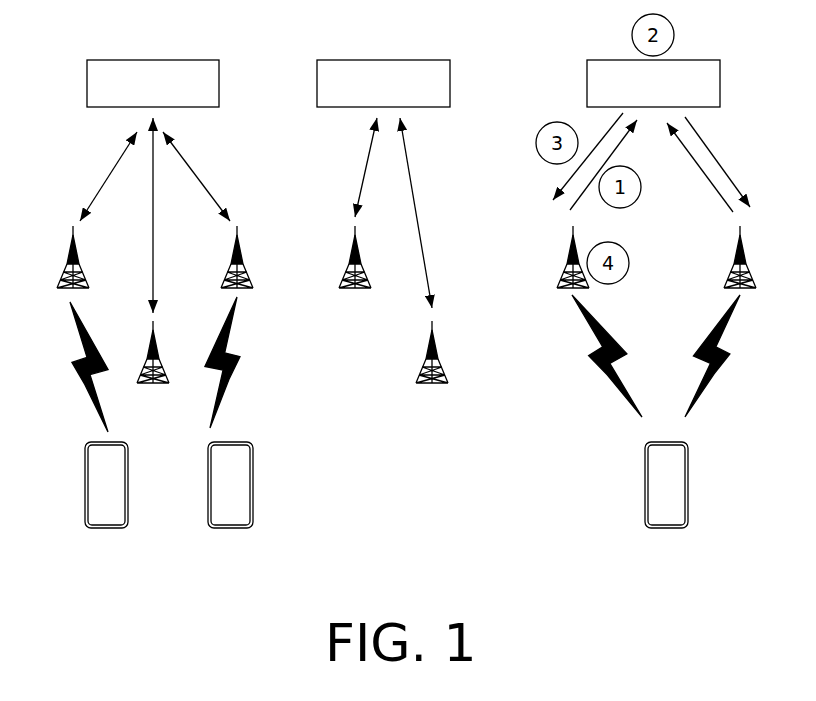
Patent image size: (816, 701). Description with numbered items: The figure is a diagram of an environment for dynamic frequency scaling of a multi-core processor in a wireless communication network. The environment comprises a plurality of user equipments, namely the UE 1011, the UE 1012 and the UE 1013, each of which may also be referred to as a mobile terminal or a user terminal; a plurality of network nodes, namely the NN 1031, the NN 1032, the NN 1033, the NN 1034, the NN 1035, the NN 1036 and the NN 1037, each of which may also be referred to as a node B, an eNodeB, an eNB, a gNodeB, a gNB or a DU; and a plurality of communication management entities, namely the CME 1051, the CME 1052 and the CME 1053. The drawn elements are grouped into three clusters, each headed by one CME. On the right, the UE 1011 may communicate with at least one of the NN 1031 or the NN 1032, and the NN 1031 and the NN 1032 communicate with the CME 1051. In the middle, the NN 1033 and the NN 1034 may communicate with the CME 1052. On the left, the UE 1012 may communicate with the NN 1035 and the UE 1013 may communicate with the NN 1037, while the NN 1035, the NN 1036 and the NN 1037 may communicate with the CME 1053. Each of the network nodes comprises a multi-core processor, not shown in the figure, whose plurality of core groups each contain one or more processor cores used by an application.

The CME 1051 is at (720, 83).
The CME 1052 is at (450, 83).
The CME 1053 is at (219, 83).
The NN 1031 is at (568, 244).
The NN 1032 is at (736, 244).
The NN 1033 is at (439, 351).
The NN 1034 is at (350, 249).
The NN 1035 is at (231, 247).
The NN 1036 is at (157, 335).
The NN 1037 is at (79, 247).
The UE 1011 is at (688, 484).
The UE 1012 is at (253, 484).
The UE 1013 is at (84, 485).